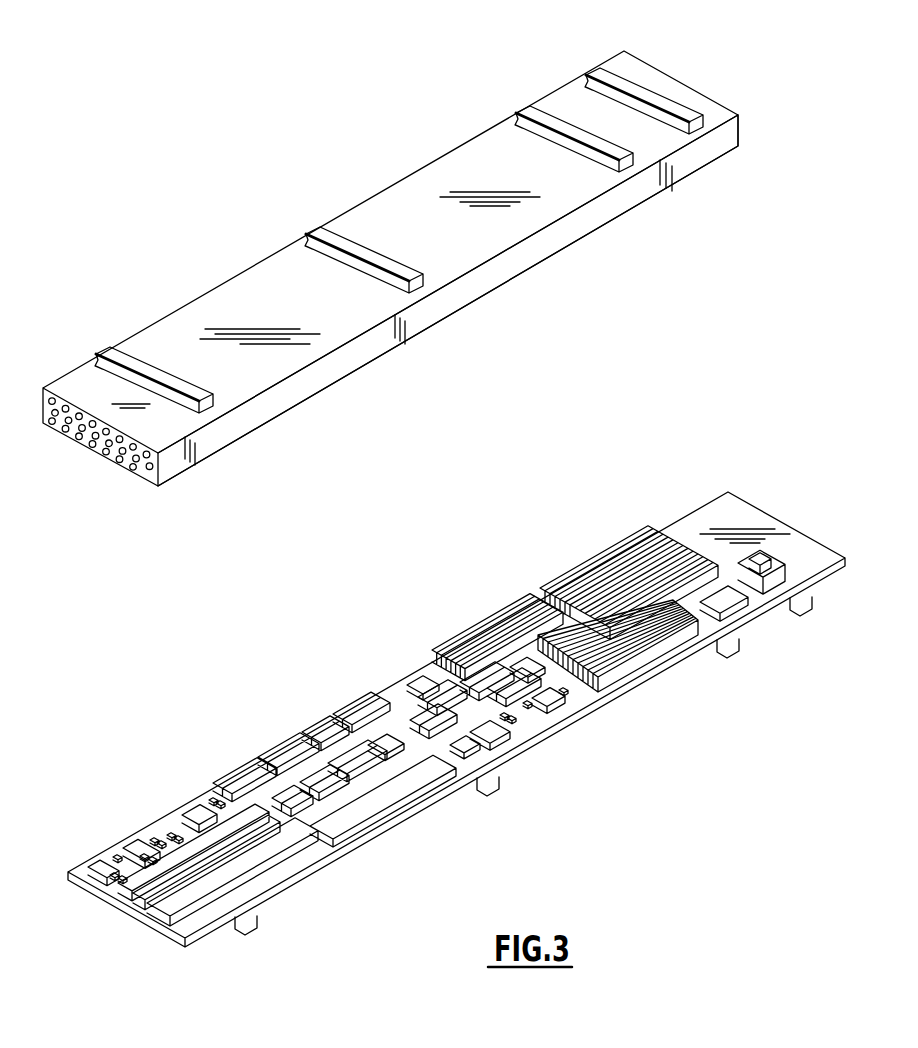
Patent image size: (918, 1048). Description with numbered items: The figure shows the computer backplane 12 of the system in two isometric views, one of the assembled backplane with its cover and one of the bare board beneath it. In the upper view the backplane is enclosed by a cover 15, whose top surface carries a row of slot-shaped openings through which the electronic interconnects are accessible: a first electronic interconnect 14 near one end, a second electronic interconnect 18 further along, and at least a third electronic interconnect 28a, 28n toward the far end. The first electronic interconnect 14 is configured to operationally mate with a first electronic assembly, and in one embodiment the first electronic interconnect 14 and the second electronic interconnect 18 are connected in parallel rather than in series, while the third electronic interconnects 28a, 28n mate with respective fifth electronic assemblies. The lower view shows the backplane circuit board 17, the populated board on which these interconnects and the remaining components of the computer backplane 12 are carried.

The computer backplane 12 is at (390, 249).
The first electronic interconnect 14 is at (112, 350).
The cover 15 is at (480, 283).
The backplane circuit board 17 is at (693, 510).
The second electronic interconnect 18 is at (322, 228).
The third electronic interconnect 28a is at (540, 104).
The third electronic interconnect 28n is at (598, 74).